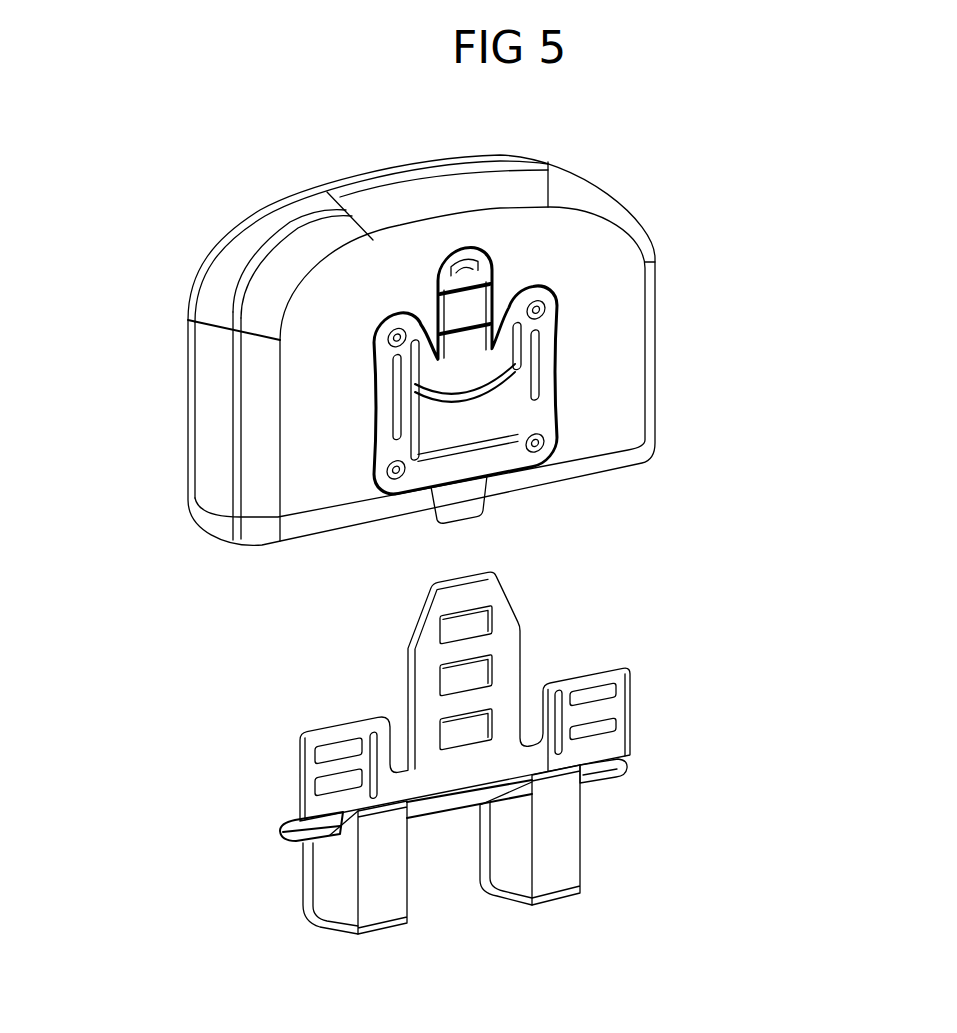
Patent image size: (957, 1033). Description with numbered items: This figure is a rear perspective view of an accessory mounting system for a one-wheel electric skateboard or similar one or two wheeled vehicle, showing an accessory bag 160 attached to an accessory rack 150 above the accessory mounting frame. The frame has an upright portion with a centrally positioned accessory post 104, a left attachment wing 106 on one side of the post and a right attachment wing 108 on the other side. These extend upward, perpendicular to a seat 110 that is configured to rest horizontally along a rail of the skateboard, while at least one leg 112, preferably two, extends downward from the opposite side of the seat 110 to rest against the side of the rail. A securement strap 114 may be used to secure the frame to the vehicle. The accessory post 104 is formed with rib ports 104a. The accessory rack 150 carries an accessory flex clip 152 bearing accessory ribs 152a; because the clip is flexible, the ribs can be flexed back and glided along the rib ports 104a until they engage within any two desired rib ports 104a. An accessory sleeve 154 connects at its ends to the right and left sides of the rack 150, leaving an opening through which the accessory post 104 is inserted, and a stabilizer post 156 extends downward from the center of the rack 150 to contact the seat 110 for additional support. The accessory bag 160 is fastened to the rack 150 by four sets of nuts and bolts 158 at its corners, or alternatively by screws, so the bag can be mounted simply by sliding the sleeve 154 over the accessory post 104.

The accessory post 104 is at (407, 644).
The rib ports 104a is at (467, 728).
The left attachment wing 106 is at (631, 700).
The right attachment wing 108 is at (294, 748).
The seat 110 is at (277, 831).
The leg 112 is at (335, 866).
The securement strap 114 is at (388, 878).
The accessory rack 150 is at (372, 390).
The accessory flex clip 152 is at (437, 272).
The accessory ribs 152a is at (493, 280).
The accessory sleeve 154 is at (430, 433).
The stabilizer post 156 is at (457, 494).
The nuts and bolts 158 is at (382, 338).
The accessory bag 160 is at (658, 355).